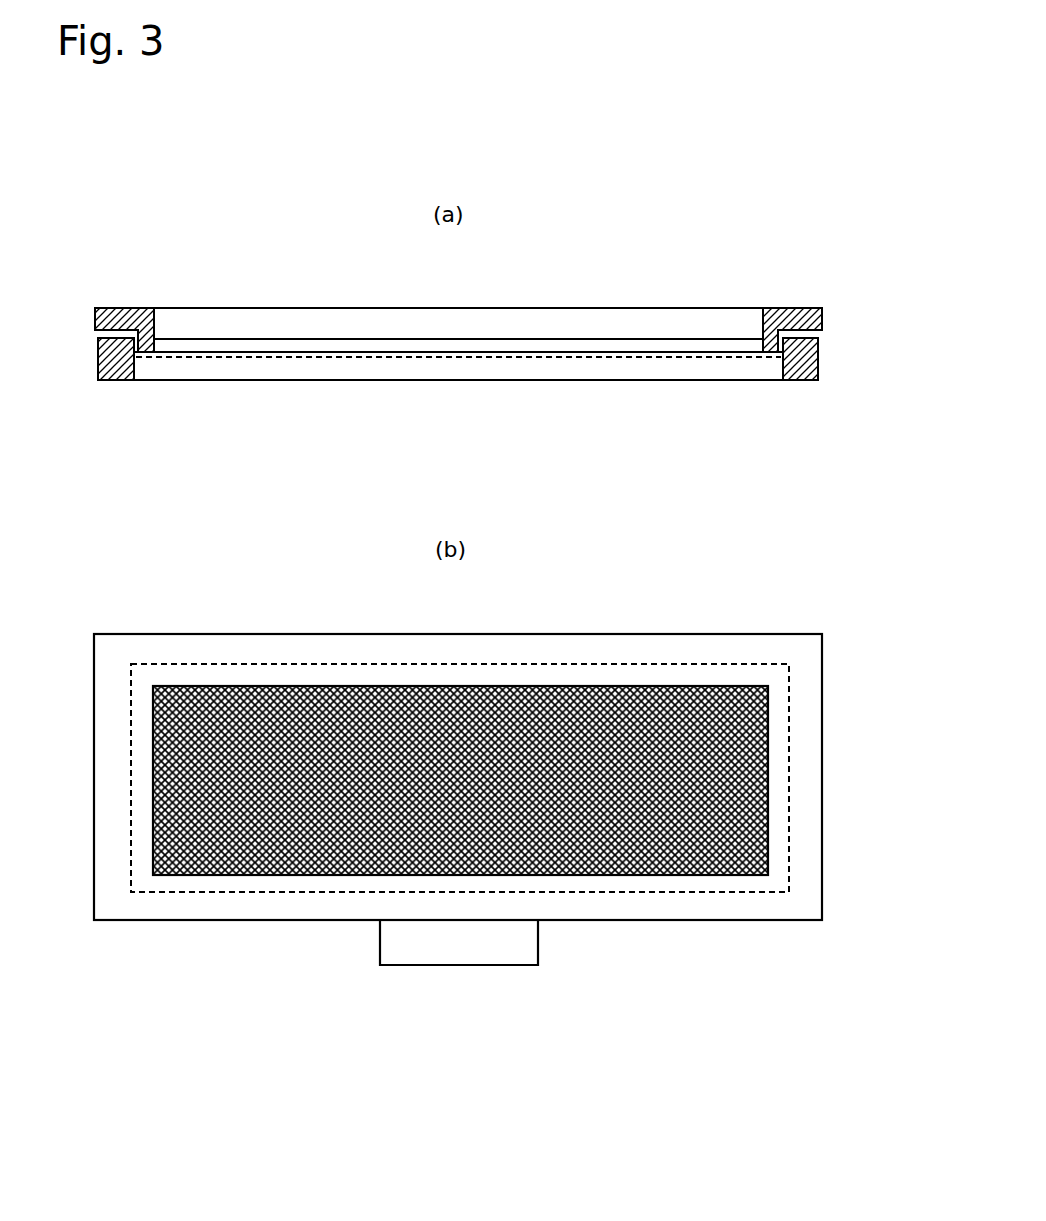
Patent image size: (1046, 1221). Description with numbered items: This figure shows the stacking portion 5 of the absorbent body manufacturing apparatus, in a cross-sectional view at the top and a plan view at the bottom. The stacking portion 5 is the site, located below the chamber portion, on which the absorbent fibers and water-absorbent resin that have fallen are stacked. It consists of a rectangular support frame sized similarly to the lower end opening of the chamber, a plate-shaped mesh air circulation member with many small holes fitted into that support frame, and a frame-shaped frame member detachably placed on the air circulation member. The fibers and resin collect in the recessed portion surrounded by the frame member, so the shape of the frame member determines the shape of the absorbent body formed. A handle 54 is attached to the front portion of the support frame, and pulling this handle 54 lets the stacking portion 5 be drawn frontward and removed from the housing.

The stacking portion 5 is at (668, 272).
The handle 54 is at (442, 957).